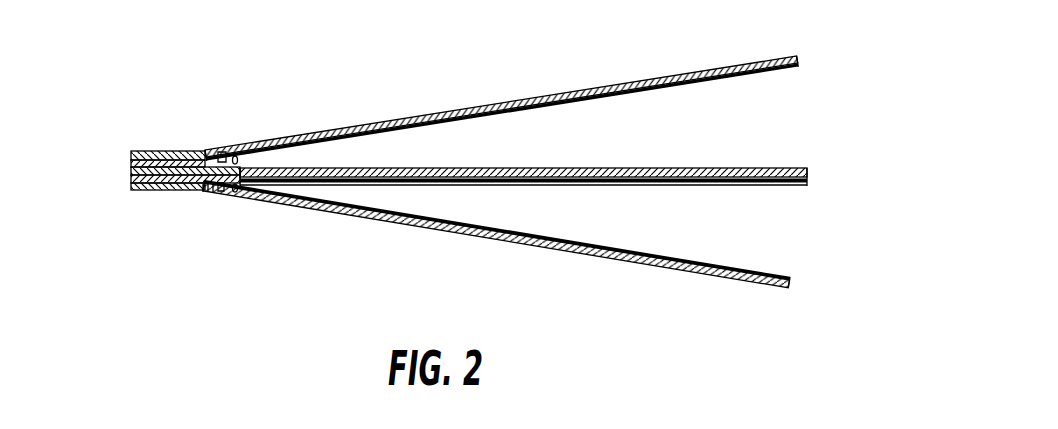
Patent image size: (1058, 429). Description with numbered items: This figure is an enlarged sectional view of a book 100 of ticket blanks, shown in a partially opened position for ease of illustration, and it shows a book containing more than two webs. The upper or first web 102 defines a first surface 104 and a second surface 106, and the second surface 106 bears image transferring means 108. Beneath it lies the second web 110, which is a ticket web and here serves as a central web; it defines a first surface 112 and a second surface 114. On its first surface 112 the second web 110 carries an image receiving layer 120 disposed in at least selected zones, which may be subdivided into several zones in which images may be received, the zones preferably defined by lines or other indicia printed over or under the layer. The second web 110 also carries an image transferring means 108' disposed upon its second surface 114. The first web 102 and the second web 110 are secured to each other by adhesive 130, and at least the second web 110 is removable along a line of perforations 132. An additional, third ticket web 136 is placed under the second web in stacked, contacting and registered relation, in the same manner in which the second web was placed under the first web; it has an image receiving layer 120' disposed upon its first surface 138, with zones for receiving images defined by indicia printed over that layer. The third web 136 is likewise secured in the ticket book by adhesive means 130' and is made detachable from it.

The book of ticket blanks 100 is at (494, 72).
The first web 102 is at (812, 53).
The first surface of first web 104 is at (262, 141).
The second surface of first web 106 is at (233, 156).
The image transferring means 108 is at (506, 140).
The image transferring means 108' is at (523, 208).
The second web 110 is at (818, 176).
The first surface of second web 112 is at (222, 158).
The second surface of second web 114 is at (221, 192).
The image receiving layer 120 is at (533, 144).
The image receiving layer 120' is at (506, 200).
The adhesive 130 is at (133, 142).
The adhesive means 130' is at (151, 207).
The line of perforations 132 is at (213, 192).
The third ticket web 136 is at (793, 286).
The first surface of third web 138 is at (236, 196).